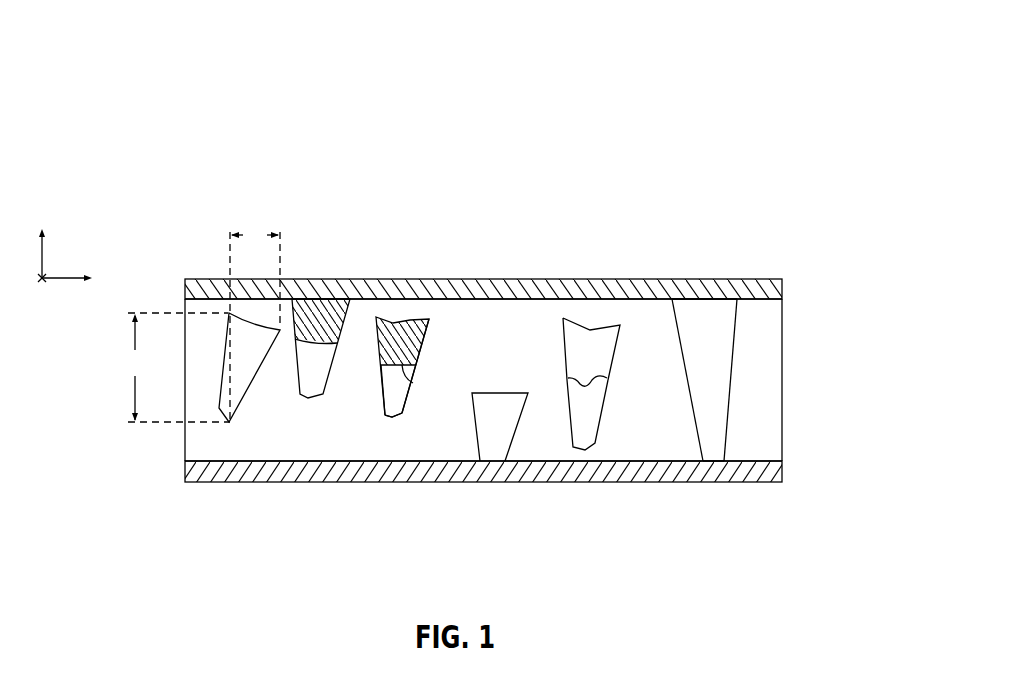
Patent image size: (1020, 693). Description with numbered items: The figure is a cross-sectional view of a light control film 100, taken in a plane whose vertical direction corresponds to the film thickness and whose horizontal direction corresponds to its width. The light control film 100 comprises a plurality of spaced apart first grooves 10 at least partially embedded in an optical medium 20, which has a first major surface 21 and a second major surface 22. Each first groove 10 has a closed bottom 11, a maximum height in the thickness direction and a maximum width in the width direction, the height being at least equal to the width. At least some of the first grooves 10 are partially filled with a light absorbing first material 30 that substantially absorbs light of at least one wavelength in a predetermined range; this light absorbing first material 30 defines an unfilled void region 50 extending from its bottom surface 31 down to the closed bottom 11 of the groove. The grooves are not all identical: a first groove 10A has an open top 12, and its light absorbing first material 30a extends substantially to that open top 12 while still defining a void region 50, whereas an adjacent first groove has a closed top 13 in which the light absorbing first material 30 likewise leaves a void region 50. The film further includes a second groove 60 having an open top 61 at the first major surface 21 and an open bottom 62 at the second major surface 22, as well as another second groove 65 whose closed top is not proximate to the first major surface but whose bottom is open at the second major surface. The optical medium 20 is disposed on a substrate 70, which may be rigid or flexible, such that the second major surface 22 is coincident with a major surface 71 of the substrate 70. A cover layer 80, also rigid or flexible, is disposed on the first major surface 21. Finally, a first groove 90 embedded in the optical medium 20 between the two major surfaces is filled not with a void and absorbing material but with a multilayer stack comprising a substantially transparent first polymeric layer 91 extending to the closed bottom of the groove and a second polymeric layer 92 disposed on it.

The light control film 100 is at (130, 57).
The first groove 10 is at (443, 310).
The first groove 10A is at (314, 381).
The closed bottom 11 is at (392, 412).
The open top 12 is at (325, 297).
The closed top 13 is at (418, 320).
The optical medium 20 is at (773, 448).
The first major surface 21 is at (610, 298).
The second major surface 22 is at (587, 463).
The light absorbing first material 30 is at (404, 379).
The light absorbing first material 30a is at (340, 305).
The bottom surface of the light absorbing first material 31 is at (413, 383).
The void region 50 is at (395, 380).
The second groove 60 is at (757, 384).
The open top 61 is at (712, 298).
The open bottom 62 is at (722, 463).
The second groove 65 is at (490, 437).
The substrate 70 is at (453, 483).
The major surface 71 is at (217, 461).
The cover layer 80 is at (514, 285).
The first groove 90 is at (605, 374).
The first polymeric layer 91 is at (583, 410).
The second polymeric layer 92 is at (595, 375).